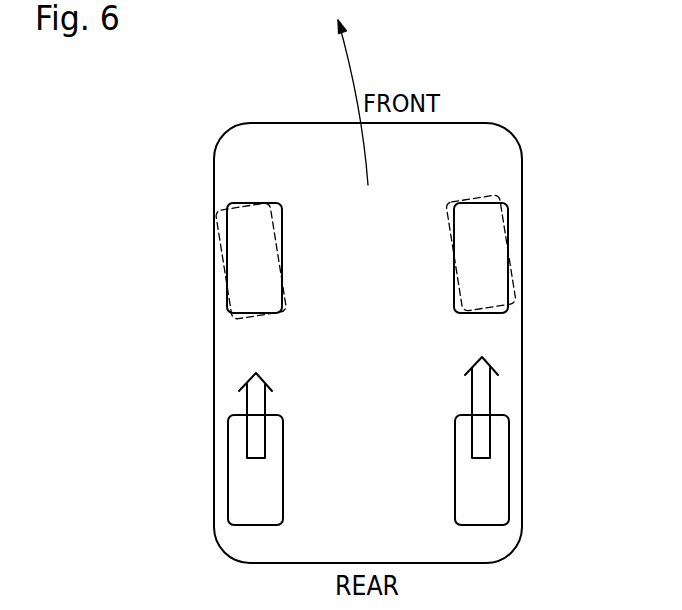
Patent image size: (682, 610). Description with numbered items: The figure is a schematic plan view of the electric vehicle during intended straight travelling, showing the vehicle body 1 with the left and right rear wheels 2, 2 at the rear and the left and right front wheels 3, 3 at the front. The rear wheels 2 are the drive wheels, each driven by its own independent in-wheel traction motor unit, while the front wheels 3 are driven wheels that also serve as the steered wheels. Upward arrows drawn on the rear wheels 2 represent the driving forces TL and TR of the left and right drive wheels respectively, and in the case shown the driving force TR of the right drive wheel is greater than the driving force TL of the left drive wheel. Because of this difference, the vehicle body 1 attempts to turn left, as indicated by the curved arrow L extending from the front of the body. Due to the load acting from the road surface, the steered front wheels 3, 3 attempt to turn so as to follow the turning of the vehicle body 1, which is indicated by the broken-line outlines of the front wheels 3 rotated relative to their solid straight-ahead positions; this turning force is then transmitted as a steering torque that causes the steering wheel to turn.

The vehicle body 1 is at (527, 183).
The rear wheel 2 is at (242, 484).
The front wheel 3 is at (248, 266).
The arrow indicating turning direction L is at (353, 69).
The driving force of the left drive wheel TL is at (247, 402).
The driving force of the right drive wheel TR is at (491, 402).